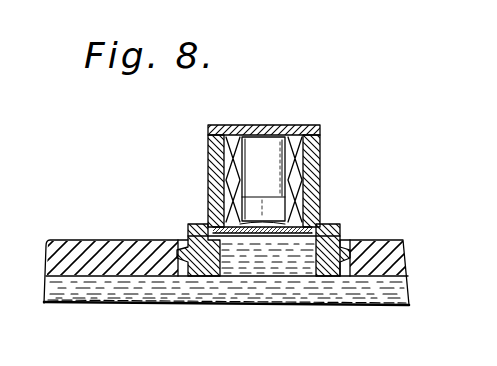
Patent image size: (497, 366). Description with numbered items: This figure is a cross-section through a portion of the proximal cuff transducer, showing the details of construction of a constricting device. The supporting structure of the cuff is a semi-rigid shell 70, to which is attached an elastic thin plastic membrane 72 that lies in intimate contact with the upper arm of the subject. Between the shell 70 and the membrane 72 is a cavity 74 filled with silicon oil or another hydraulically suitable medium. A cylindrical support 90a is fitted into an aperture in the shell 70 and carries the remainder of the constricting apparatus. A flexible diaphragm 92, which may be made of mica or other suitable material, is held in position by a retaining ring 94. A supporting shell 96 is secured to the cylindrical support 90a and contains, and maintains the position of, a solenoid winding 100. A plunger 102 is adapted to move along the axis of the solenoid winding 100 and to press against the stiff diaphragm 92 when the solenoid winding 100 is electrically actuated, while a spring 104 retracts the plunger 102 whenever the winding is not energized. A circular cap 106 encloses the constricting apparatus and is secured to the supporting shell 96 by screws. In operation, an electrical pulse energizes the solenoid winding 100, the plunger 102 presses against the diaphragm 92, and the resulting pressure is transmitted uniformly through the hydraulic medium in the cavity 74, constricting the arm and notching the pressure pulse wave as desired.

The semi-rigid shell 70 is at (87, 249).
The elastic thin plastic membrane 72 is at (65, 305).
The cavity 74 is at (167, 296).
The cylindrical support 90a is at (345, 245).
The flexible diaphragm 92 is at (316, 244).
The retaining ring 94 is at (187, 232).
The supporting shell 96 is at (316, 166).
The solenoid winding 100 is at (297, 157).
The plunger 102 is at (258, 157).
The spring 104 is at (215, 224).
The circular cap 106 is at (233, 126).